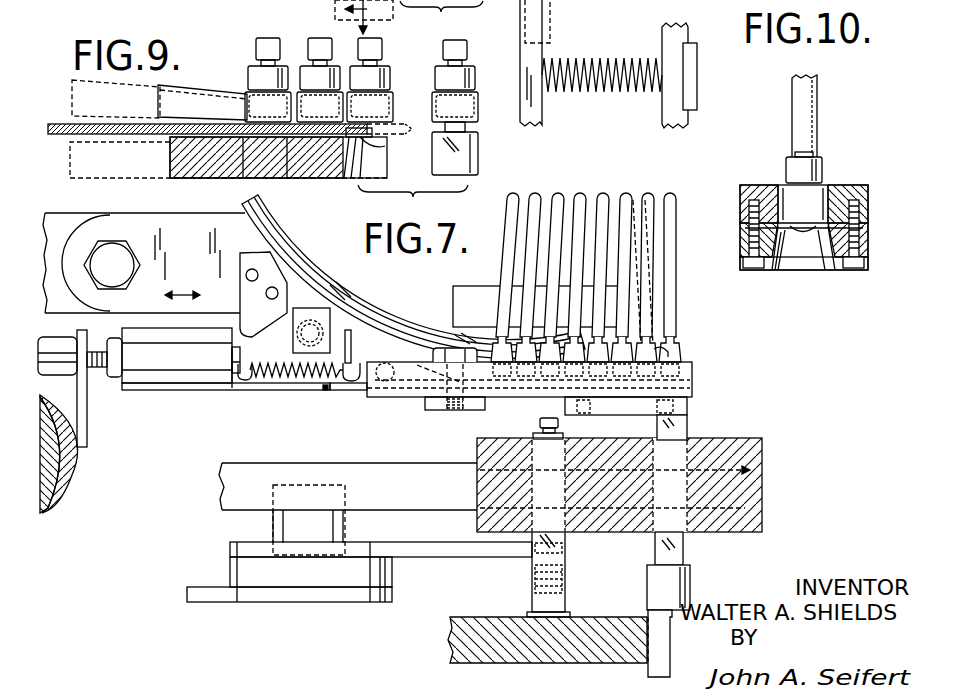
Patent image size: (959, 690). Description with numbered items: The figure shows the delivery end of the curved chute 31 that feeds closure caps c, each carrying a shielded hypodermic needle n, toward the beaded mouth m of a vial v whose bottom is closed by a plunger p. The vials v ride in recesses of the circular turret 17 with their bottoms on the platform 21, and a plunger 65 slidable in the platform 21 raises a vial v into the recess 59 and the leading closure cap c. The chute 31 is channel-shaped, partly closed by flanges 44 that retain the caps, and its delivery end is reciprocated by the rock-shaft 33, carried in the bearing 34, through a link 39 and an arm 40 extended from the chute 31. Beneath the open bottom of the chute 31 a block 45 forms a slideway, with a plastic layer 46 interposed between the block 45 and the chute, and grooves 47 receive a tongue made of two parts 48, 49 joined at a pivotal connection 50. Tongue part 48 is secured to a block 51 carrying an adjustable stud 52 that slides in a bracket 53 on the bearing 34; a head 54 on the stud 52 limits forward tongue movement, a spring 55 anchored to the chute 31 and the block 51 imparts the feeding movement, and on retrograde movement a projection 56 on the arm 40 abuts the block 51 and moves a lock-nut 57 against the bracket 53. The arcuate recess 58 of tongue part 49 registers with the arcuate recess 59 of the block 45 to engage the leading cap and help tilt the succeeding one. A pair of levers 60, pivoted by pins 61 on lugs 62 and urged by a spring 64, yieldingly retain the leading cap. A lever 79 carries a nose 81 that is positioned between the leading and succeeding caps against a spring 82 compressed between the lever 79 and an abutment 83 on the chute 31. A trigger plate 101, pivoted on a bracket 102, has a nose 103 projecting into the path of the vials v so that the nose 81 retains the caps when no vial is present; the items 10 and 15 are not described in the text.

In FIG. 9, the machine 10 is at (350, 17).
In FIG. 9, the feed section 15 is at (456, 6).
In FIG. 7, the circular turret 17 is at (763, 487).
In FIG. 7, the platform 21 is at (450, 642).
In FIG. 9, the curved chute 31 is at (208, 94).
In FIG. 10, the curved chute 31 is at (868, 200).
In FIG. 7, the curved chute 31 is at (378, 312).
In FIG. 7, the rock-shaft 33 is at (56, 486).
In FIG. 7, the bearing 34 is at (77, 470).
In FIG. 7, the link 39 is at (75, 219).
In FIG. 7, the arm 40 is at (190, 222).
In FIG. 9, the flanges 44 is at (232, 96).
In FIG. 10, the flanges 44 is at (846, 185).
In FIG. 7, the flanges 44 is at (312, 241).
In FIG. 9, the block 45 is at (356, 174).
In FIG. 10, the block 45 is at (868, 264).
In FIG. 7, the block 45 is at (688, 405).
In FIG. 9, the plastic layer 46 is at (170, 140).
In FIG. 10, the plastic layer 46 is at (868, 239).
In FIG. 10, the groove 47 is at (745, 229).
In FIG. 7, the tongue part 48 is at (253, 391).
In FIG. 9, the tongue part 49 is at (64, 134).
In FIG. 10, the tongue part 49 is at (778, 230).
In FIG. 7, the tongue part 49 is at (350, 392).
In FIG. 7, the pivotal connection 50 is at (327, 392).
In FIG. 7, the block 51 is at (190, 385).
In FIG. 7, the stud 52 is at (96, 369).
In FIG. 7, the bracket 53 is at (88, 435).
In FIG. 7, the head 54 is at (62, 373).
In FIG. 7, the spring 55 is at (297, 378).
In FIG. 7, the projection 56 is at (247, 299).
In FIG. 7, the lock-nut 57 is at (115, 379).
In FIG. 9, the arcuate recess 58 is at (373, 140).
In FIG. 10, the arcuate recess 58 is at (813, 236).
In FIG. 9, the arcuate recess 59 is at (380, 170).
In FIG. 10, the arcuate recess 59 is at (791, 270).
In FIG. 7, the levers 60 is at (417, 394).
In FIG. 7, the pins 61 is at (447, 349).
In FIG. 7, the lugs 62 is at (471, 412).
In FIG. 7, the spring 64 is at (390, 392).
In FIG. 7, the plunger 65 is at (691, 583).
In FIG. 9, the lever 79 is at (543, 118).
In FIG. 7, the lever 79 is at (479, 290).
In FIG. 7, the nose 81 is at (668, 352).
In FIG. 9, the spring 82 is at (625, 93).
In FIG. 7, the spring 82 is at (322, 316).
In FIG. 9, the abutment 83 is at (698, 98).
In FIG. 7, the abutment 83 is at (333, 331).
In FIG. 7, the plate 101 is at (443, 558).
In FIG. 7, the bracket 102 is at (190, 590).
In FIG. 7, the nose 103 is at (563, 549).
In FIG. 9, the shielded hypodermic needle n is at (467, 48).
In FIG. 10, the shielded hypodermic needle n is at (818, 92).
In FIG. 7, the shielded hypodermic needle n is at (702, 293).
In FIG. 9, the closure cap c is at (501, 115).
In FIG. 10, the closure cap c is at (798, 167).
In FIG. 7, the closure cap c is at (683, 356).
In FIG. 9, the vial v is at (479, 152).
In FIG. 7, the vial v is at (533, 598).
In FIG. 7, the beaded mouth m is at (538, 427).
In FIG. 7, the plunger p is at (563, 581).